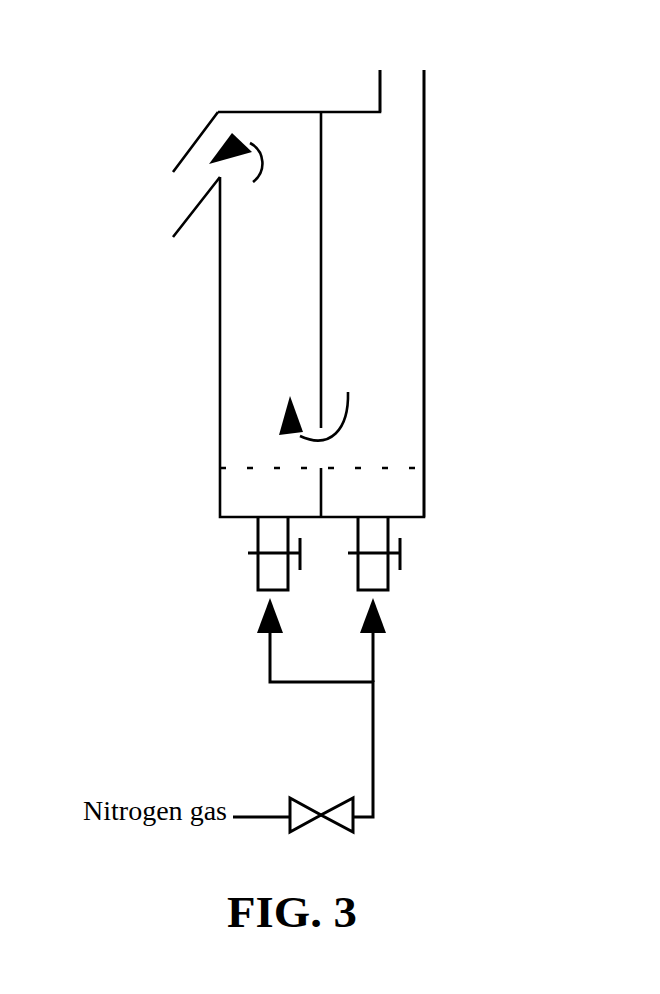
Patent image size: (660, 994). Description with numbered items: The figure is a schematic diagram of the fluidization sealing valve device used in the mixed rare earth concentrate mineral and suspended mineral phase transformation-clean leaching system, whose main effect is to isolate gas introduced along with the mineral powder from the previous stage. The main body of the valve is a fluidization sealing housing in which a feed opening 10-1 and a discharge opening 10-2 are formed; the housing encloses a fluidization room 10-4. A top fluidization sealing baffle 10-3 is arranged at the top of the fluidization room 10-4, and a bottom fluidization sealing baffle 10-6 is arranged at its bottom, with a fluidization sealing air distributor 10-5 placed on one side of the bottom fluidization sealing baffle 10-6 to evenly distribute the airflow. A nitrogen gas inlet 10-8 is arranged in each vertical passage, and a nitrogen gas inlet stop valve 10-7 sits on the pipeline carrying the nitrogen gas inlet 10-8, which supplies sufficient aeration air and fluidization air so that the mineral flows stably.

The feed opening 10-1 is at (405, 93).
The discharge opening 10-2 is at (203, 178).
The top fluidization sealing baffle 10-3 is at (335, 215).
The fluidization room 10-4 is at (437, 316).
The fluidization sealing air distributor 10-5 is at (260, 452).
The bottom fluidization sealing baffle 10-6 is at (328, 493).
The nitrogen gas inlet stop valve 10-7 is at (407, 557).
The nitrogen gas inlet 10-8 is at (252, 578).